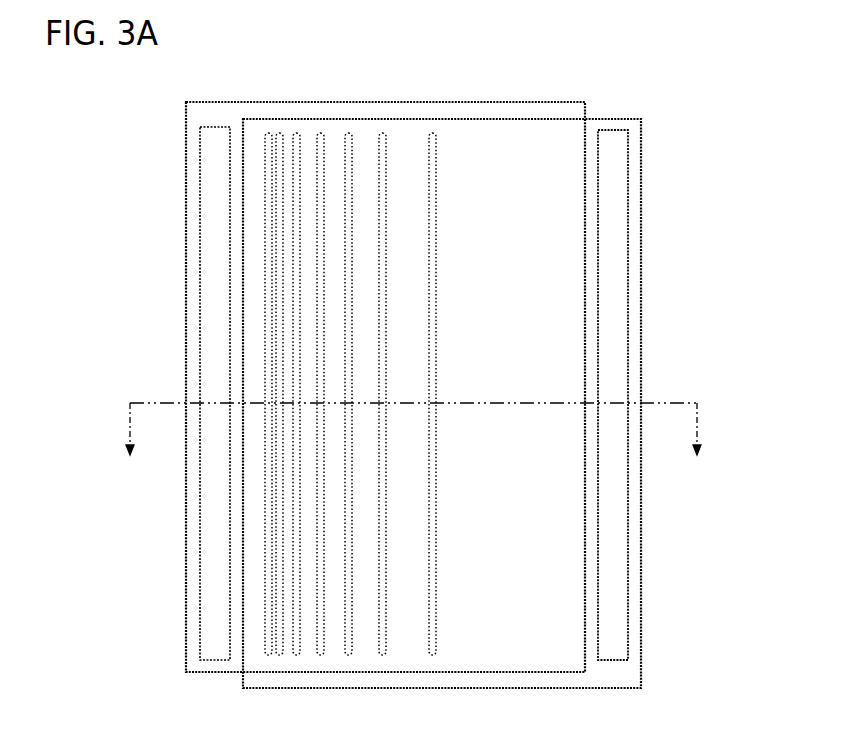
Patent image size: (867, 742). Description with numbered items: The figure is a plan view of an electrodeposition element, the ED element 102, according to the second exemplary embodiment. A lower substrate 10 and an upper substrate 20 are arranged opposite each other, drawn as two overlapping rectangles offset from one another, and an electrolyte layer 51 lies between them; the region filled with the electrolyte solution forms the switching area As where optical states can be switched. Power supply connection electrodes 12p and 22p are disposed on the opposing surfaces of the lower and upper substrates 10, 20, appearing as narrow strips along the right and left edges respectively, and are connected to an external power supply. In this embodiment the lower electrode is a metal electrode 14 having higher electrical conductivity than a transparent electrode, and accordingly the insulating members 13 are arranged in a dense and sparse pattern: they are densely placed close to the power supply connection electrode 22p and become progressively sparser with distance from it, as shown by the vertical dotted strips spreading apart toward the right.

The ED element 102 is at (717, 712).
The upper substrate 20 is at (332, 387).
The power supply connection electrode 22p is at (147, 393).
The lower substrate 10 is at (516, 403).
The metal electrode 14 is at (516, 403).
The power supply connection electrode 12p is at (680, 395).
The electrolyte layer 51 is at (566, 112).
The insulating members 13 is at (366, 359).